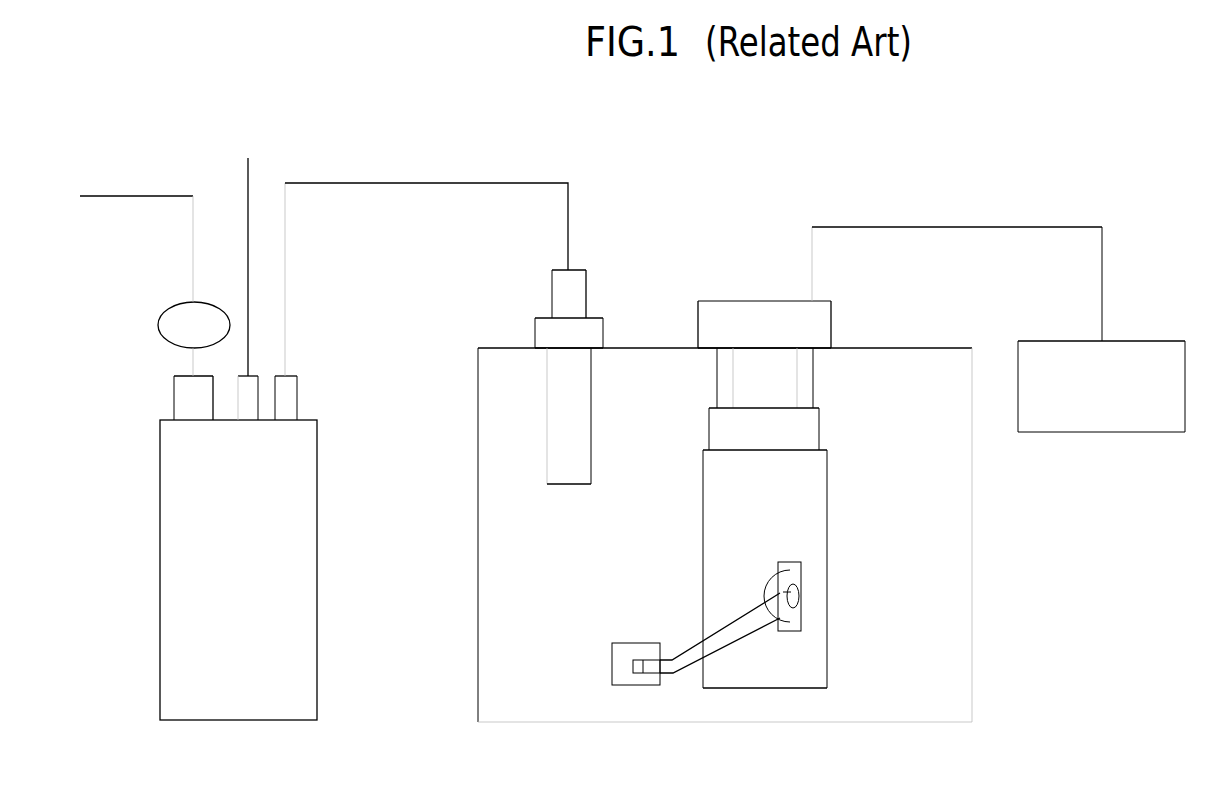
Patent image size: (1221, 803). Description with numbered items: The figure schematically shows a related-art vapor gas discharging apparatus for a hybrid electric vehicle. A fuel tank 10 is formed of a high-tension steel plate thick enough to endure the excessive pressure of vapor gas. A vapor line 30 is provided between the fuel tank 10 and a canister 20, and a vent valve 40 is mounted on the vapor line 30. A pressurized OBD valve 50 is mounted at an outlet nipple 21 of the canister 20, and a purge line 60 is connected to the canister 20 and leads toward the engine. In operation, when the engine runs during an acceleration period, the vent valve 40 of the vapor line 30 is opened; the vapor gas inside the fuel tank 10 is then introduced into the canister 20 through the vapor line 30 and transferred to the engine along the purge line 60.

The fuel tank 10 is at (971, 535).
The canister 20 is at (160, 570).
The outlet nipple 21 is at (173, 397).
The vapor line 30 is at (425, 182).
The vent valve 40 is at (580, 417).
The pressurized OBD valve 50 is at (158, 323).
The purge line 60 is at (248, 203).